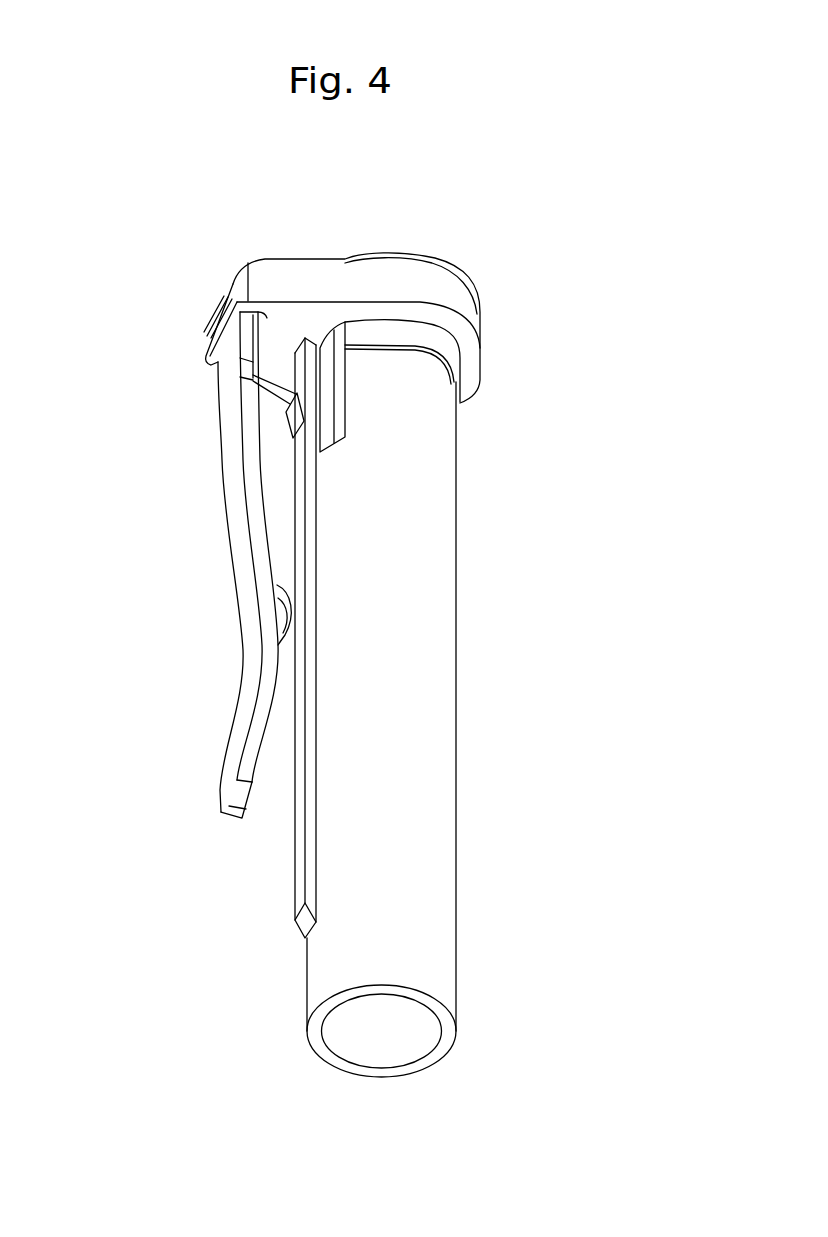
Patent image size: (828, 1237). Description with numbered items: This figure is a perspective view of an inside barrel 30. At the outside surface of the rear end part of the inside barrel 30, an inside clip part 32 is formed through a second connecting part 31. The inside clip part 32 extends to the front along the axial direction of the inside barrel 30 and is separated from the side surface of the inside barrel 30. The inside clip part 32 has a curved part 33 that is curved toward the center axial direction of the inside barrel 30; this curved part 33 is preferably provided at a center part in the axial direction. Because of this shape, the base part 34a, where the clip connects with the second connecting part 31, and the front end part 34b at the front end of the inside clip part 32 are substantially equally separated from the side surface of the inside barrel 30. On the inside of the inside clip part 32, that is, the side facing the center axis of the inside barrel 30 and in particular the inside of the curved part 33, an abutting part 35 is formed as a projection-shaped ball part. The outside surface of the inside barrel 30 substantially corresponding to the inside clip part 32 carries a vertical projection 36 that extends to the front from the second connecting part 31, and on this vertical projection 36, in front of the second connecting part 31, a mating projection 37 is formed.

The inside barrel 30 is at (530, 598).
The second connecting part 31 is at (283, 283).
The inside clip part 32 is at (235, 490).
The curved part 33 is at (252, 603).
The base part 34a is at (228, 348).
The front end part 34b is at (227, 782).
The abutting part 35 is at (295, 595).
The vertical projection 36 is at (300, 808).
The mating projection 37 is at (285, 410).